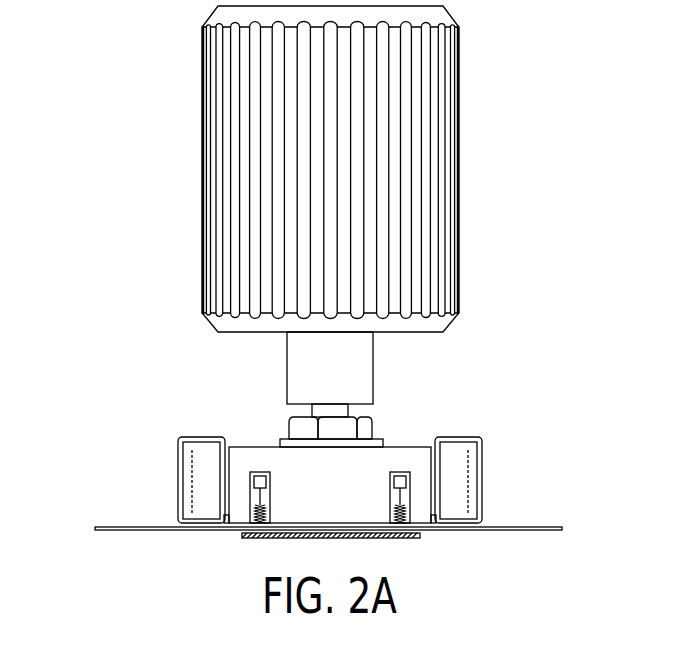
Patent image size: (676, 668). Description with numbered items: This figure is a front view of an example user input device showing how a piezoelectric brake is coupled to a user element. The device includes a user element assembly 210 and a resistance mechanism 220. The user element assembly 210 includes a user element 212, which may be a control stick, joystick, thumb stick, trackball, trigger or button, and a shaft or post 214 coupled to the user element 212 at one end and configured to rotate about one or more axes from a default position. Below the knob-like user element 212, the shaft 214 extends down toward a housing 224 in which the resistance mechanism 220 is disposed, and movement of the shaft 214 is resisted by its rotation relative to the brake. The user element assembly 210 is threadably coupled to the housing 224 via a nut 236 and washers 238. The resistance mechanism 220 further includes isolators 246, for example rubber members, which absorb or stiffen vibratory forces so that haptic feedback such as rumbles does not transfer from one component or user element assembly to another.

The user element assembly 210 is at (130, 193).
The user element 212 is at (430, 190).
The shaft or post 214 is at (338, 410).
The resistance mechanism 220 is at (163, 448).
The housing 224 is at (297, 508).
The nut 236 is at (345, 430).
The washers 238 is at (288, 445).
The isolators 246 is at (455, 475).